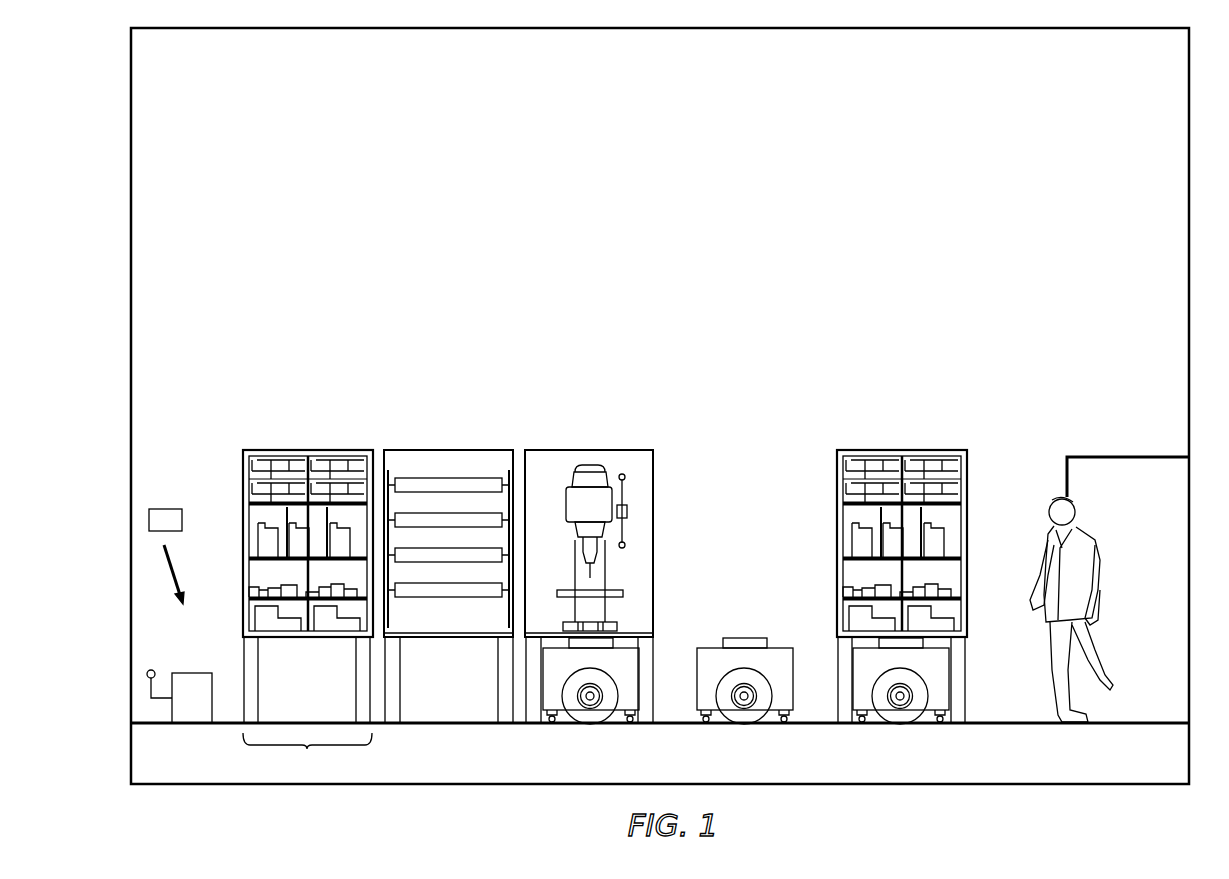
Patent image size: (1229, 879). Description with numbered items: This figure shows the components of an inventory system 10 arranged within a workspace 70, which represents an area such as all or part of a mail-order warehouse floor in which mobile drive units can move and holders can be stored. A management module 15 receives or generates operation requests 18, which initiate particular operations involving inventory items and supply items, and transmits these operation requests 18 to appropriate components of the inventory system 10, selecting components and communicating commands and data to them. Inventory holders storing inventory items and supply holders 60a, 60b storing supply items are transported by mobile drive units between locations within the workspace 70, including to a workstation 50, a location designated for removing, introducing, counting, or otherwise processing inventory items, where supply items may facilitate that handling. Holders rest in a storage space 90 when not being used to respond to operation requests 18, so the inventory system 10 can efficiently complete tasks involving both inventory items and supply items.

The inventory system 10 is at (85, 201).
The management module 15 is at (182, 673).
The operation request 18 is at (160, 509).
The workstation 50 is at (1128, 457).
The supply holder 60a is at (417, 450).
The supply holder 60b is at (557, 450).
The workspace 70 is at (662, 102).
The storage space 90 is at (307, 751).